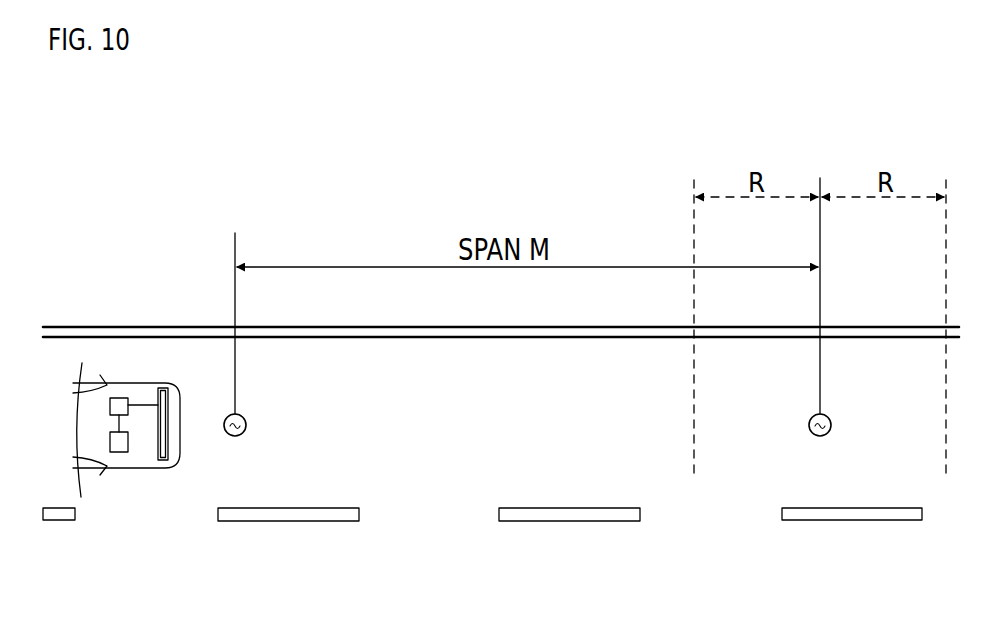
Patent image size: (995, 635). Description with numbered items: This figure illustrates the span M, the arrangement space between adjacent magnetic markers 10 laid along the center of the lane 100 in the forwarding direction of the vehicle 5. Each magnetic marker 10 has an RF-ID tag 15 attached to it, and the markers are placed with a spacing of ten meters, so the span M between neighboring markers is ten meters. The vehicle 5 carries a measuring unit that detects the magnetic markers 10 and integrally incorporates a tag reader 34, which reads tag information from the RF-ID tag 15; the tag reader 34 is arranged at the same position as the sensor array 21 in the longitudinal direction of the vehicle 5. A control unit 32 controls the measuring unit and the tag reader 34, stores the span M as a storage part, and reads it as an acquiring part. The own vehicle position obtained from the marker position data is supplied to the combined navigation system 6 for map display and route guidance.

The vehicle 5 is at (150, 477).
The navigation system 6 is at (119, 452).
The magnetic marker 10 is at (247, 437).
The RF-ID tag 15 is at (235, 437).
The sensor array 21 is at (163, 388).
The control unit 32 is at (119, 398).
The tag reader 34 is at (155, 420).
The lane 100 is at (353, 393).